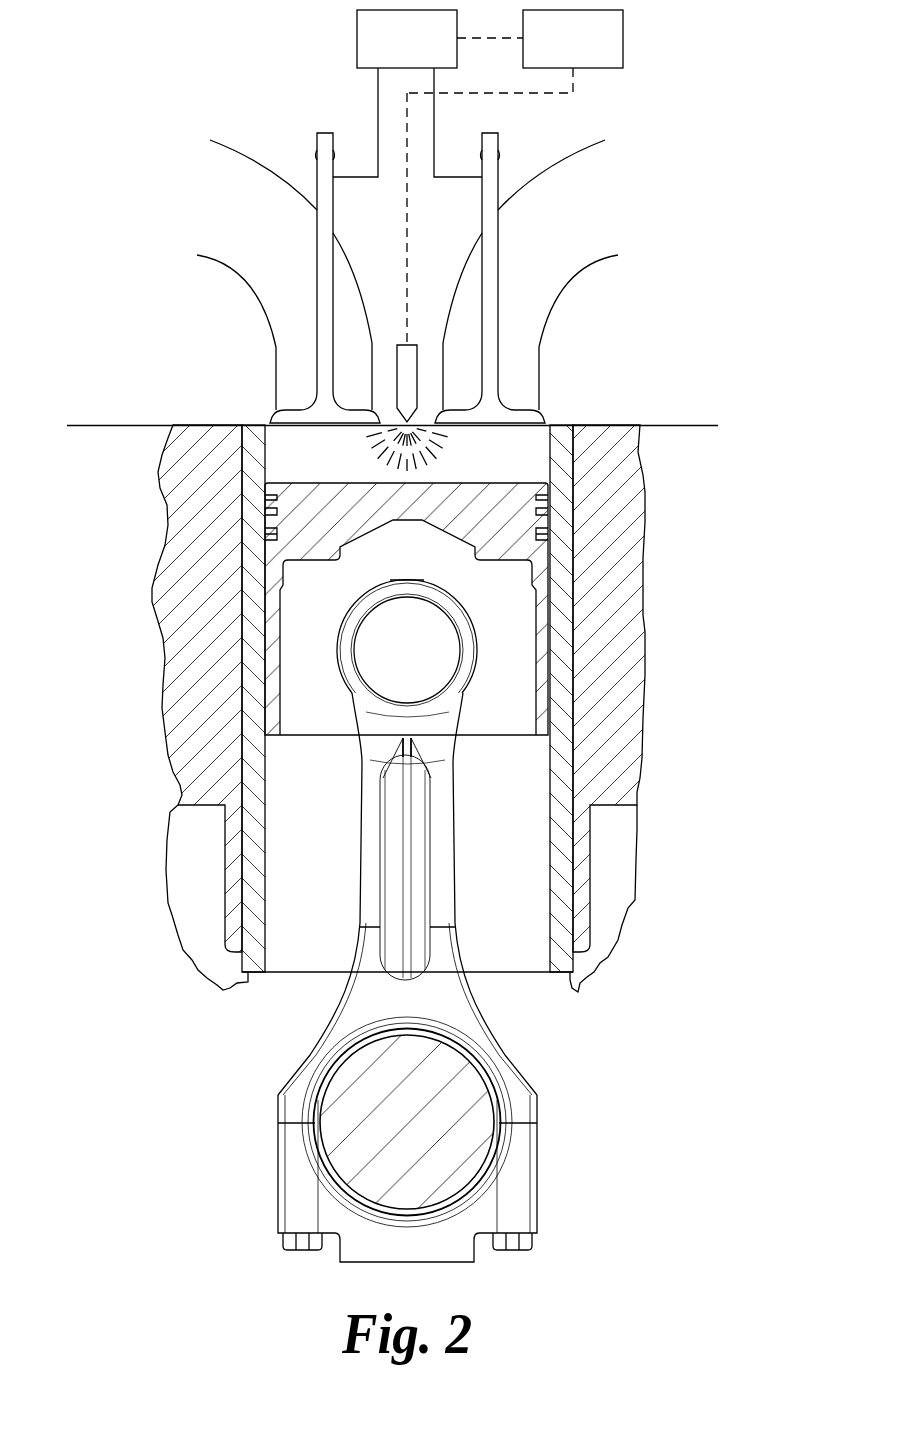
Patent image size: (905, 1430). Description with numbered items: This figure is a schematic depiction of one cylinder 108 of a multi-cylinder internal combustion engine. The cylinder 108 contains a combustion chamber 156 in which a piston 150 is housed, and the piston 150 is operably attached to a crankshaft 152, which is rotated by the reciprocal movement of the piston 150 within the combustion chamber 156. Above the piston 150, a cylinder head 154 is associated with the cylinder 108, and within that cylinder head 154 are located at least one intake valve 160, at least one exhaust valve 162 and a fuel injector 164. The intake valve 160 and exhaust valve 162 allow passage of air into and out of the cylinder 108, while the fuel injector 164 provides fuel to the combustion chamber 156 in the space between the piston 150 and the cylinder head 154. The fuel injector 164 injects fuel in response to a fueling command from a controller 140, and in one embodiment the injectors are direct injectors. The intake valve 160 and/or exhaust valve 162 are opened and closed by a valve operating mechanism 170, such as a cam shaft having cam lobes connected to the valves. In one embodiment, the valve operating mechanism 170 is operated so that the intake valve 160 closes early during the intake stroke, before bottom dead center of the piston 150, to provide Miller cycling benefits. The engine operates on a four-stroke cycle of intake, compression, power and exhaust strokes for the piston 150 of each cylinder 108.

The cylinder 108 is at (143, 328).
The controller 140 is at (554, 53).
The piston 150 is at (510, 662).
The crankshaft 152 is at (457, 1137).
The cylinder head 154 is at (681, 425).
The combustion chamber 156 is at (530, 446).
The intake valve 160 is at (313, 243).
The exhaust valve 162 is at (500, 243).
The fuel injector 164 is at (417, 352).
The valve operating mechanism 170 is at (388, 53).